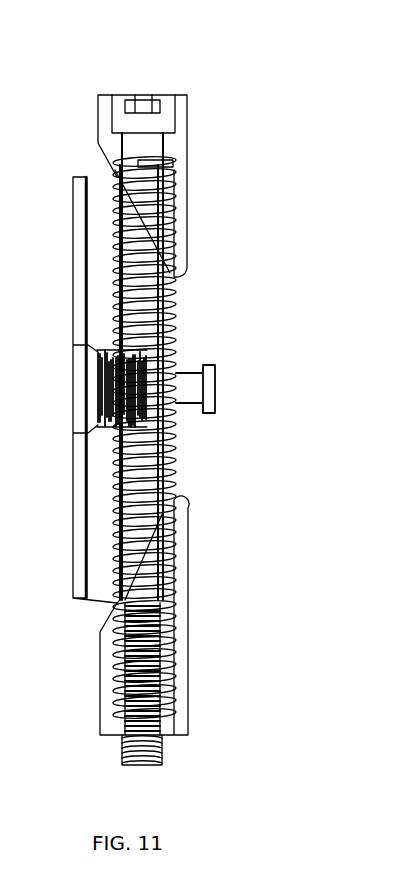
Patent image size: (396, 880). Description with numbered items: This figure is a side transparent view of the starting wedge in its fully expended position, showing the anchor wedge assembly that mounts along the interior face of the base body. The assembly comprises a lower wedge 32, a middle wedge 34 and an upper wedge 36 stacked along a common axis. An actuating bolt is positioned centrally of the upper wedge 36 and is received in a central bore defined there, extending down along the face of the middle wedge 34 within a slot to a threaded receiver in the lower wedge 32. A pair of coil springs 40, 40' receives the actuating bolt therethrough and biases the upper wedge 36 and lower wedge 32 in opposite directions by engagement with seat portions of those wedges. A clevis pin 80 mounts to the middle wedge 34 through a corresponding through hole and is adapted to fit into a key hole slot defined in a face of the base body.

The lower wedge 32 is at (188, 642).
The middle wedge 34 is at (78, 327).
The upper wedge 36 is at (187, 160).
The coil spring 40 is at (191, 216).
The coil spring 40' is at (199, 546).
The clevis pin 80 is at (212, 386).